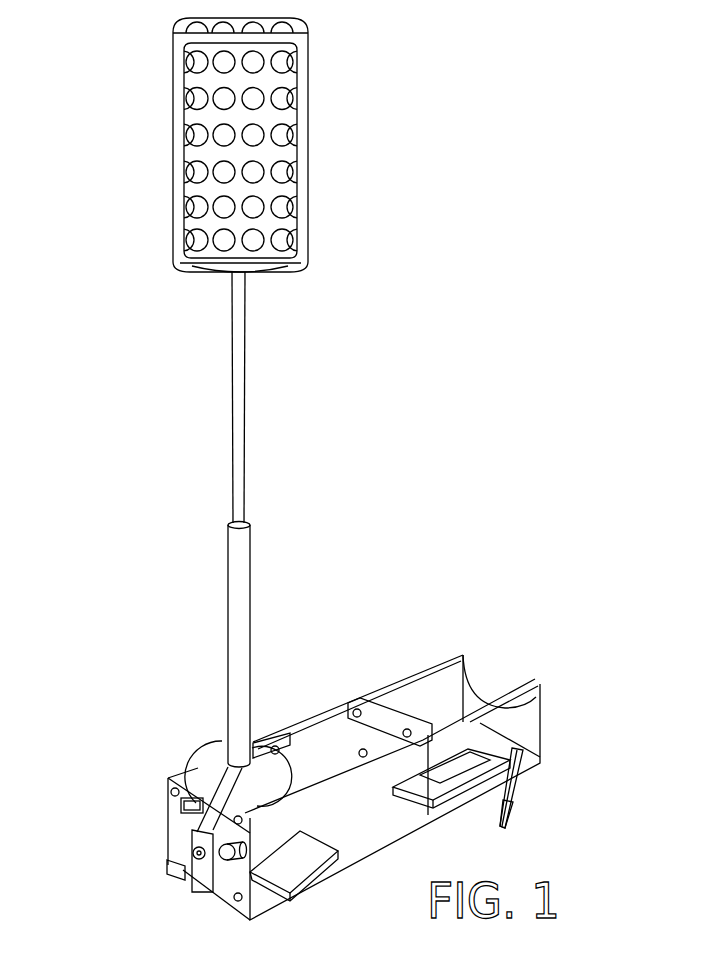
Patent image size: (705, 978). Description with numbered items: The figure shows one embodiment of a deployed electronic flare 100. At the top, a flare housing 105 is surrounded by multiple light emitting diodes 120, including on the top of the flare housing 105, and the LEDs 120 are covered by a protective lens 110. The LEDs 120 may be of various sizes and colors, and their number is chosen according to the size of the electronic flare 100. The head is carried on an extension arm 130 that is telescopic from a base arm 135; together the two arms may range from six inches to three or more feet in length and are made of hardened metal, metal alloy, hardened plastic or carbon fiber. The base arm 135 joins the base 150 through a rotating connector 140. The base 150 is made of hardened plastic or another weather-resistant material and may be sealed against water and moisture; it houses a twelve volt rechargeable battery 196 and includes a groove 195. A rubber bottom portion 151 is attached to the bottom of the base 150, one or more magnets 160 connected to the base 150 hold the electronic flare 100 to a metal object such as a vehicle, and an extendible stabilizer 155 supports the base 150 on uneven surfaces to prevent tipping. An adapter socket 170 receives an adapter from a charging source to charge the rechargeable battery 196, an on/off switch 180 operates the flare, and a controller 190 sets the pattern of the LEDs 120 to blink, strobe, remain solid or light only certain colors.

The electronic flare 100 is at (363, 472).
The flare housing 105 is at (231, 145).
The protective lens 110 is at (294, 145).
The light emitting diodes 120 is at (165, 255).
The extension arm 130 is at (324, 397).
The base arm 135 is at (322, 645).
The rotating connector 140 is at (192, 799).
The base 150 is at (413, 792).
The rubber bottom portion 151 is at (567, 773).
The extendible stabilizer 155 is at (568, 800).
The magnet 160 is at (324, 866).
The adapter socket 170 is at (127, 855).
The on/off switch 180 is at (134, 795).
The controller 190 is at (294, 884).
The groove 195 is at (419, 676).
The rechargeable battery 196 is at (467, 804).